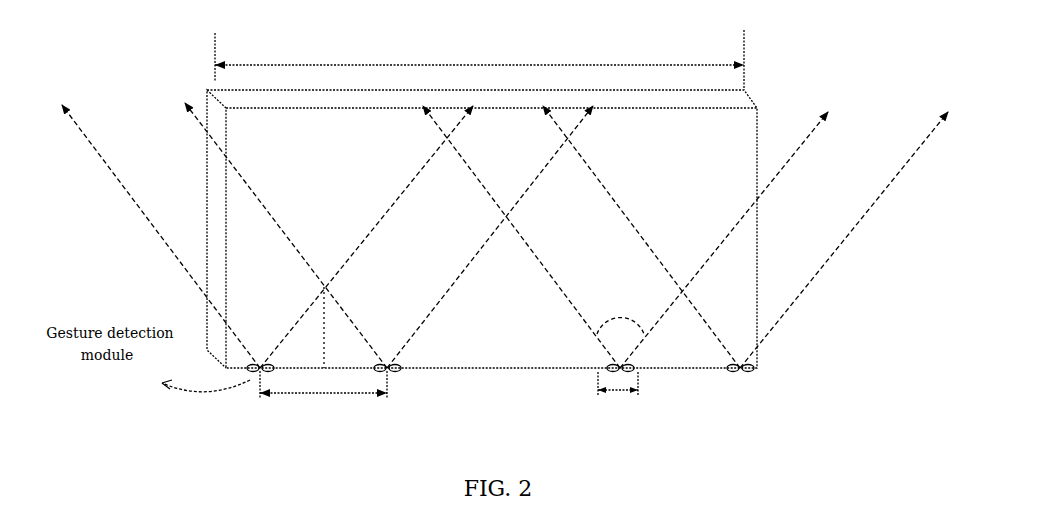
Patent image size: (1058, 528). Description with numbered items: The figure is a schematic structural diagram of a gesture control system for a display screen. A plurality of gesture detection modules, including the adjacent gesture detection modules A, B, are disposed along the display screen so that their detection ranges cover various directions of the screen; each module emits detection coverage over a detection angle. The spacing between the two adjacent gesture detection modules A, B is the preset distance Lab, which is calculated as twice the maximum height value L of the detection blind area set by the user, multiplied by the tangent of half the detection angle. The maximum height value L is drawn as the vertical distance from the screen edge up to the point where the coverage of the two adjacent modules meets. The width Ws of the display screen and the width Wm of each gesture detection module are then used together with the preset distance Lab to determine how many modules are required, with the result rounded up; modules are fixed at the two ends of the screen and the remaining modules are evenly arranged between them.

The gesture detection module A is at (260, 359).
The gesture detection module B is at (387, 358).
The width of the display screen Ws is at (479, 60).
The maximum height value of a detection blind area L is at (314, 327).
The preset distance between two adjacent gesture detection modules Lab is at (323, 384).
The width of each gesture detection module Wm is at (618, 383).